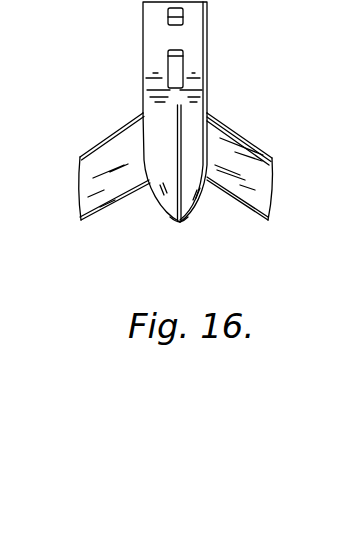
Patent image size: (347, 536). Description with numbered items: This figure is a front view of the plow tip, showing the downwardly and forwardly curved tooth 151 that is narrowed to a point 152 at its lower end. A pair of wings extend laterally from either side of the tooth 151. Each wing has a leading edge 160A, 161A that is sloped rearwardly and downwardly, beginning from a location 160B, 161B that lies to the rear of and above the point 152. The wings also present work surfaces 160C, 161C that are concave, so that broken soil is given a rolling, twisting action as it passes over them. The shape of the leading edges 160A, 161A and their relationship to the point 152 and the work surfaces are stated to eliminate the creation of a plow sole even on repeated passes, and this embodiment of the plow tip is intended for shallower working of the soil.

The tooth 151 is at (202, 73).
The point 152 is at (180, 224).
The leading edge 160A is at (103, 215).
The location 160B is at (150, 184).
The work surface 160C is at (110, 135).
The leading edge 161A is at (253, 217).
The location 161B is at (204, 187).
The work surface 161C is at (243, 150).